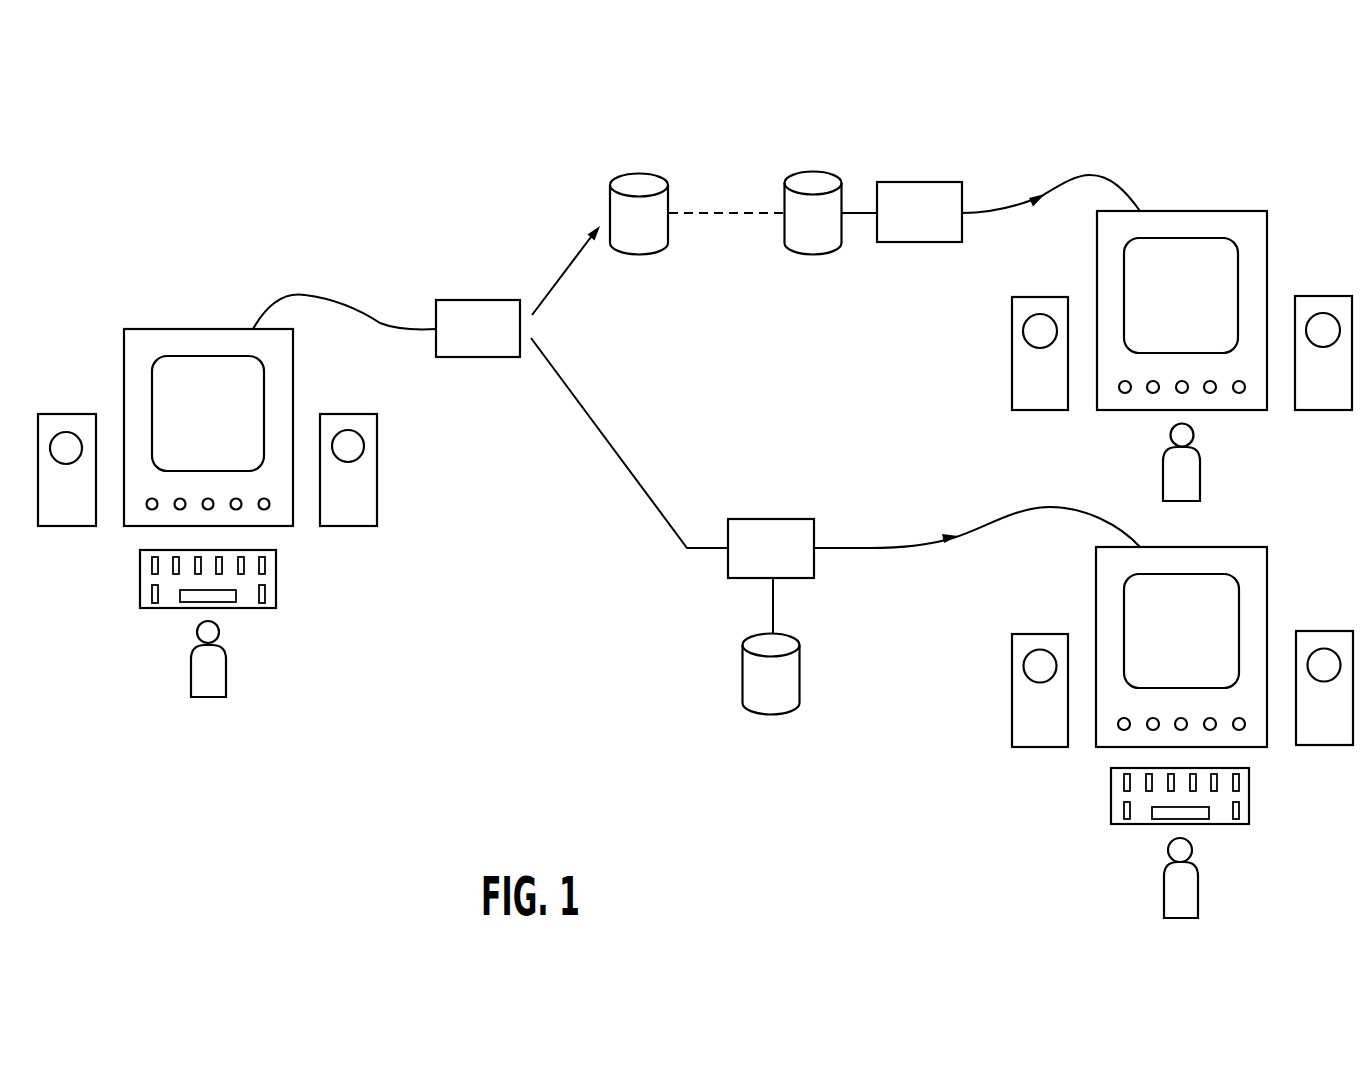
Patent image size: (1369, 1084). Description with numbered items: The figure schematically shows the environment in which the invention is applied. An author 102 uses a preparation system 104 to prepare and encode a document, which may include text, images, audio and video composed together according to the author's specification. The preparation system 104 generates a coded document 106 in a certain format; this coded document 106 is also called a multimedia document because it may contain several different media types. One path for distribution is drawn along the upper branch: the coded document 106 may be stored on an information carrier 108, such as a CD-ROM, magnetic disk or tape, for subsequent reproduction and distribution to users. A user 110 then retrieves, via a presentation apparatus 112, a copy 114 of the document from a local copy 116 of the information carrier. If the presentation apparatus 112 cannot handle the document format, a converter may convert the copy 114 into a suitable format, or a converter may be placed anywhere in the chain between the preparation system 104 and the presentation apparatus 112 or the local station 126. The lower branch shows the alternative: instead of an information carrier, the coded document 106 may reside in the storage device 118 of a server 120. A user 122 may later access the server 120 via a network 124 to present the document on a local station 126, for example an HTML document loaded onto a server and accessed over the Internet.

The author 102 is at (219, 685).
The preparation system 104 is at (152, 329).
The coded document 106 is at (471, 300).
The information carrier 108 is at (640, 173).
The user 110 is at (1195, 488).
The presentation apparatus 112 is at (1233, 211).
The copy of the document 114 is at (919, 182).
The local copy of the information carrier 116 is at (815, 171).
The storage device 118 is at (775, 718).
The server 120 is at (773, 519).
The user 122 is at (1192, 908).
The network 124 is at (901, 542).
The local station 126 is at (1267, 562).